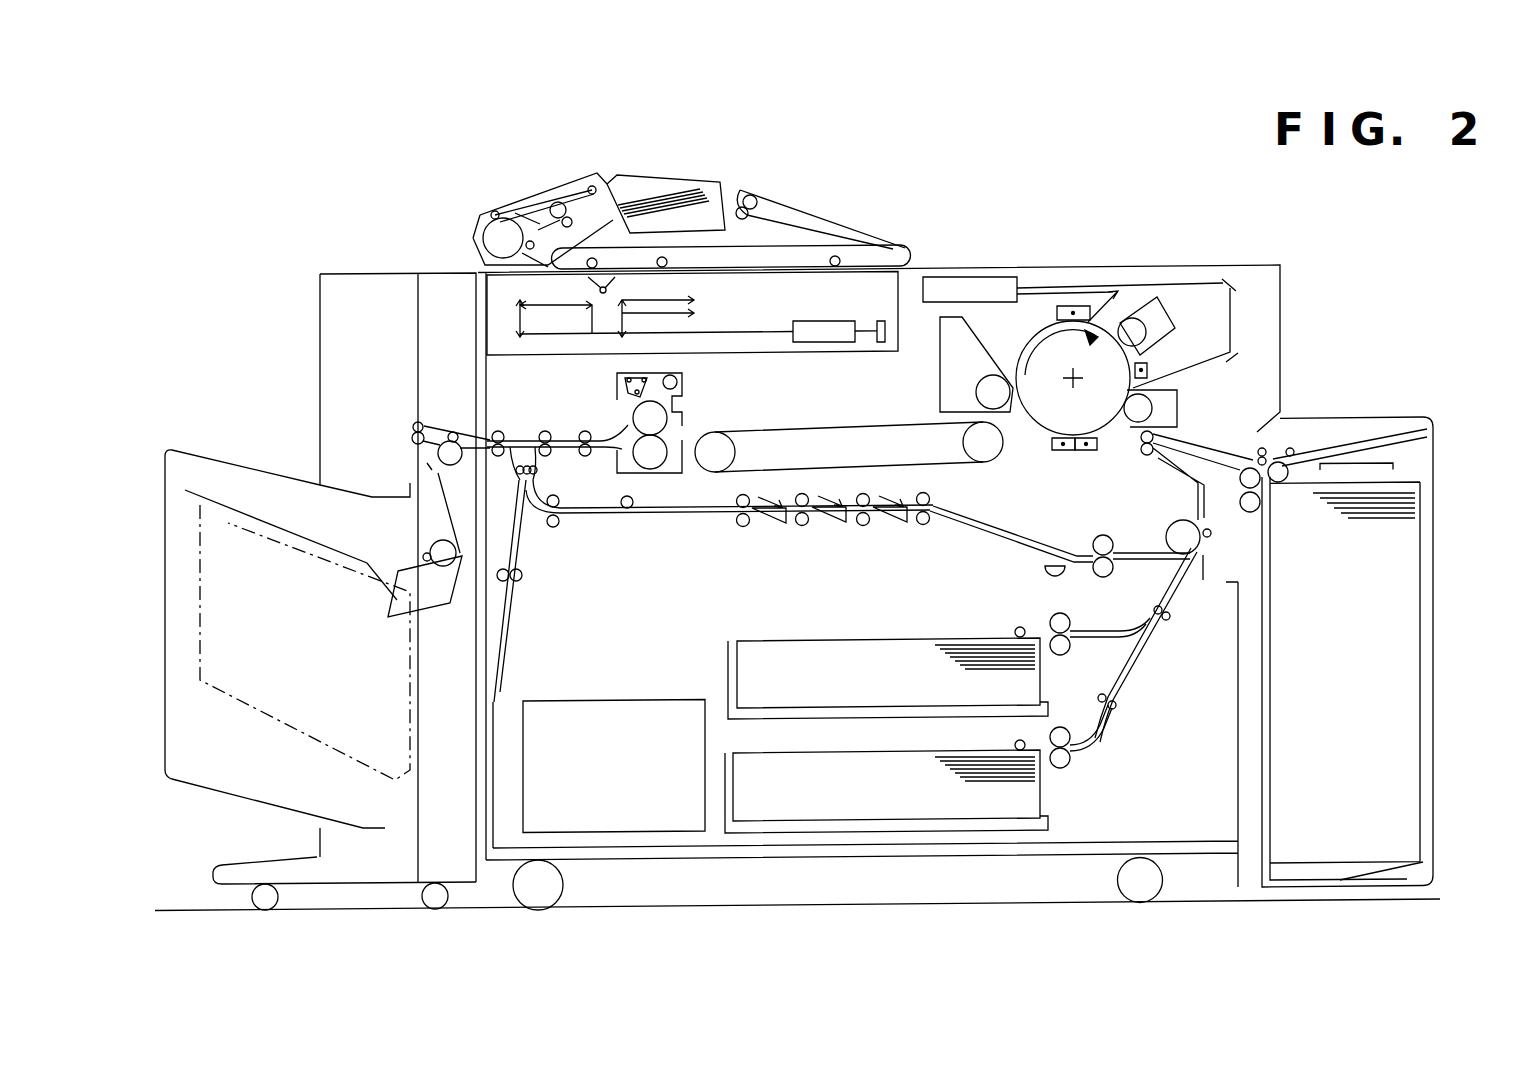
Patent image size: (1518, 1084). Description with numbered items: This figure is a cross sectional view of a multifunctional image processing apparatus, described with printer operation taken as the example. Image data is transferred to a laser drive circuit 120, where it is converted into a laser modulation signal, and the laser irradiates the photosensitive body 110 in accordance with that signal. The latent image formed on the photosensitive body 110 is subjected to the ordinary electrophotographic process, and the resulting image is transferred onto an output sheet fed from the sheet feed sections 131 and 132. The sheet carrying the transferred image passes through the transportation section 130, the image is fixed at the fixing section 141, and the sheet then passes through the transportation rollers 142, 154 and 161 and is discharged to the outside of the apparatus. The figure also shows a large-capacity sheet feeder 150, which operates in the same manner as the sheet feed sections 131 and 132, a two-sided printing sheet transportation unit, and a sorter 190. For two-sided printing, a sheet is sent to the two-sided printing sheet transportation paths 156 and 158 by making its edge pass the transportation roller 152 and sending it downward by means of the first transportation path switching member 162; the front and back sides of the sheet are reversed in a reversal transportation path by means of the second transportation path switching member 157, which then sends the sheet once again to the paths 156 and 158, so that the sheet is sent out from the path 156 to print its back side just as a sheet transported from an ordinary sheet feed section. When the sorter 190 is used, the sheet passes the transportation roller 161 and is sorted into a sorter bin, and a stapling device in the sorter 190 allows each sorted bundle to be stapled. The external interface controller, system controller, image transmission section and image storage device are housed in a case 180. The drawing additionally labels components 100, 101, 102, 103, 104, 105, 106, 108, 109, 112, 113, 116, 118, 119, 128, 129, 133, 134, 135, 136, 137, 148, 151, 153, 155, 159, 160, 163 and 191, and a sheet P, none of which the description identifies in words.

The image forming apparatus main body 100 is at (1283, 322).
The automatic document feeder 101 is at (640, 178).
The second scanning carriage 102 is at (626, 335).
The document feed rollers 103 is at (512, 215).
The first scanning carriage 104 is at (588, 314).
The light source 105 is at (508, 305).
The carriage rail 106 is at (524, 336).
The lens 108 is at (824, 321).
The CCD image sensor 109 is at (879, 321).
The photosensitive body 110 is at (1040, 428).
The charger 112 is at (1055, 310).
The transfer charger 113 is at (1148, 372).
The cleaner 116 is at (935, 350).
The sensor 118 is at (1084, 452).
The sensor 119 is at (1062, 452).
The laser drive circuit 120 is at (942, 304).
The laser beam 128 is at (1080, 288).
The developing unit 129 is at (1246, 324).
The transportation section 130 is at (822, 420).
The sheet feed section 131 is at (916, 640).
The sheet feed section 132 is at (1050, 793).
The pickup roller 133 is at (1017, 627).
The pickup roller 134 is at (1014, 743).
The feed rollers 135 is at (1072, 624).
The feed rollers 136 is at (1074, 722).
The exit rollers 137 is at (1147, 457).
The fixing section 141 is at (620, 376).
The transportation roller 142 is at (588, 430).
The switchback path 148 is at (1176, 478).
The large-capacity sheet feeder 150 is at (1435, 540).
The output tray 151 is at (1435, 860).
The transportation roller 152 is at (1283, 490).
The finisher cover 153 is at (1352, 425).
The transportation roller 154 is at (545, 430).
The vertical conveying path 155 is at (513, 630).
The two-sided printing sheet transportation path 156 is at (1050, 545).
The second transportation path switching member 157 is at (556, 494).
The two-sided printing sheet transportation path 158 is at (943, 518).
The duplex conveying path 159 is at (1203, 568).
The reversing roller 160 is at (1172, 520).
The transportation roller 161 is at (500, 430).
The first transportation path switching member 162 is at (545, 455).
The conveying rollers 163 is at (528, 572).
The case 180 is at (847, 218).
The sorter 190 is at (256, 457).
The paper feed unit 191 is at (378, 550).
The document sheets P is at (684, 190).